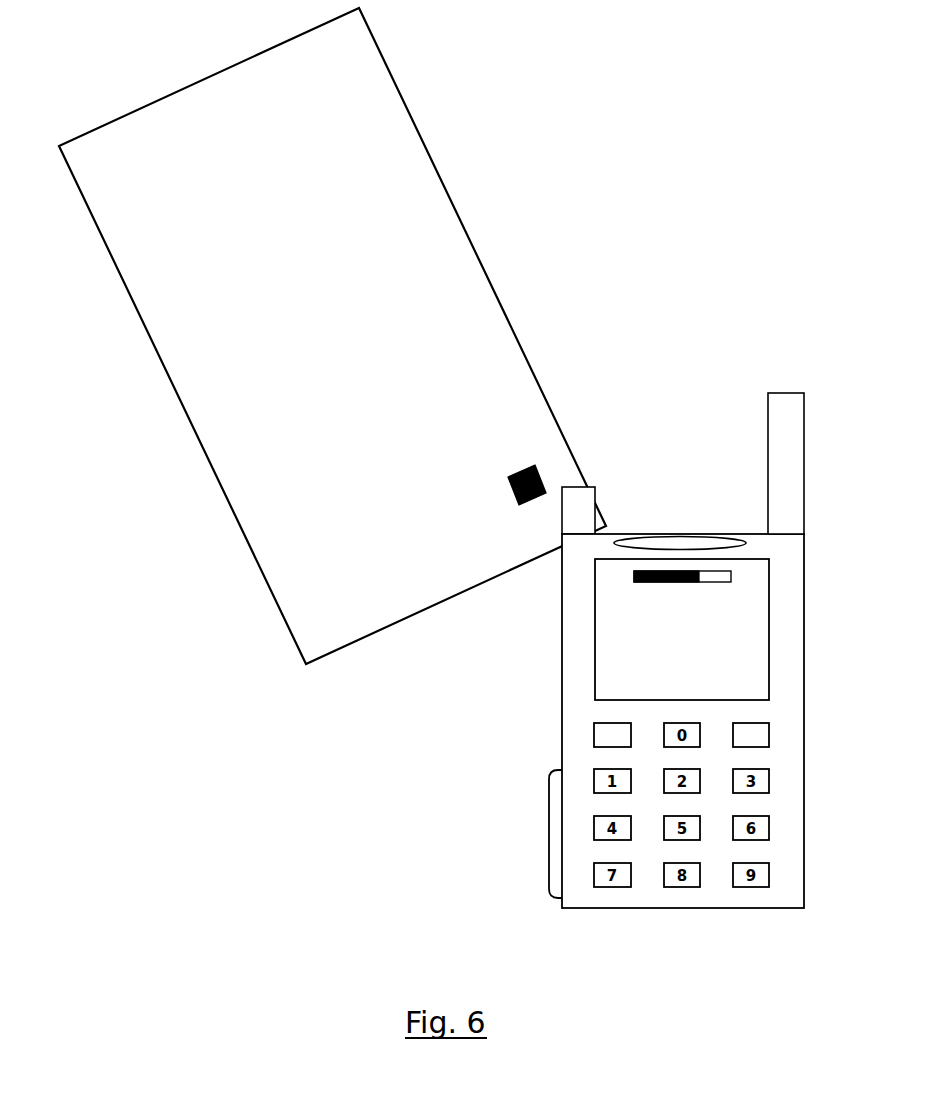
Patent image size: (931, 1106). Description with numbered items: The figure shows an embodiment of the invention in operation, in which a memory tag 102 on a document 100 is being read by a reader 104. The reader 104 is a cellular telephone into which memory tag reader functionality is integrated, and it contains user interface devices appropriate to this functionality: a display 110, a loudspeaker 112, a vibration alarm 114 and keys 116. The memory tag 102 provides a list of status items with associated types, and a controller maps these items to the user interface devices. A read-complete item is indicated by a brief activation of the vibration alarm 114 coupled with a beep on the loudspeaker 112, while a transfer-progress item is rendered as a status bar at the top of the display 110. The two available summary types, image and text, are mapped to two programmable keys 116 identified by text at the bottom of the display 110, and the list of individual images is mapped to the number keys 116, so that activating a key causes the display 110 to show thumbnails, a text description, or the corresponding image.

The document 100 is at (210, 437).
The memory tag 102 is at (531, 465).
The reader 104 is at (709, 899).
The display 110 is at (592, 653).
The loudspeaker 112 is at (687, 537).
The vibration alarm 114 is at (548, 818).
The keys 116 is at (592, 743).